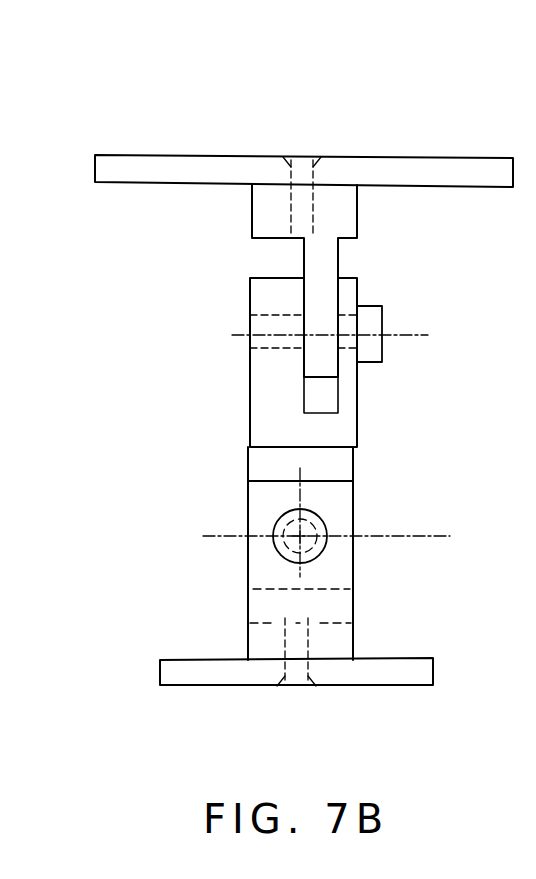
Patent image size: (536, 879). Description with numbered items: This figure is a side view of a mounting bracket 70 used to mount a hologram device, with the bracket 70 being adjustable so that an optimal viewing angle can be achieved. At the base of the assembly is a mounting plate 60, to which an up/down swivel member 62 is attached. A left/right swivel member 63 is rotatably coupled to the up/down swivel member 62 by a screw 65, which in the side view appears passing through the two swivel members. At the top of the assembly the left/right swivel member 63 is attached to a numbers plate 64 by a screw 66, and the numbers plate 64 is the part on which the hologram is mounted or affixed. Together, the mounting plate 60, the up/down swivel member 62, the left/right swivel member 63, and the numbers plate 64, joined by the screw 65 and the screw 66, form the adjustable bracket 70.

The mounting bracket 70 is at (105, 88).
The numbers plate 64 is at (383, 156).
The left/right swivel member 63 is at (249, 391).
The up/down swivel member 62 is at (248, 567).
The screw 65 is at (380, 318).
The mounting plate 60 is at (210, 688).
The screw 66 is at (302, 162).